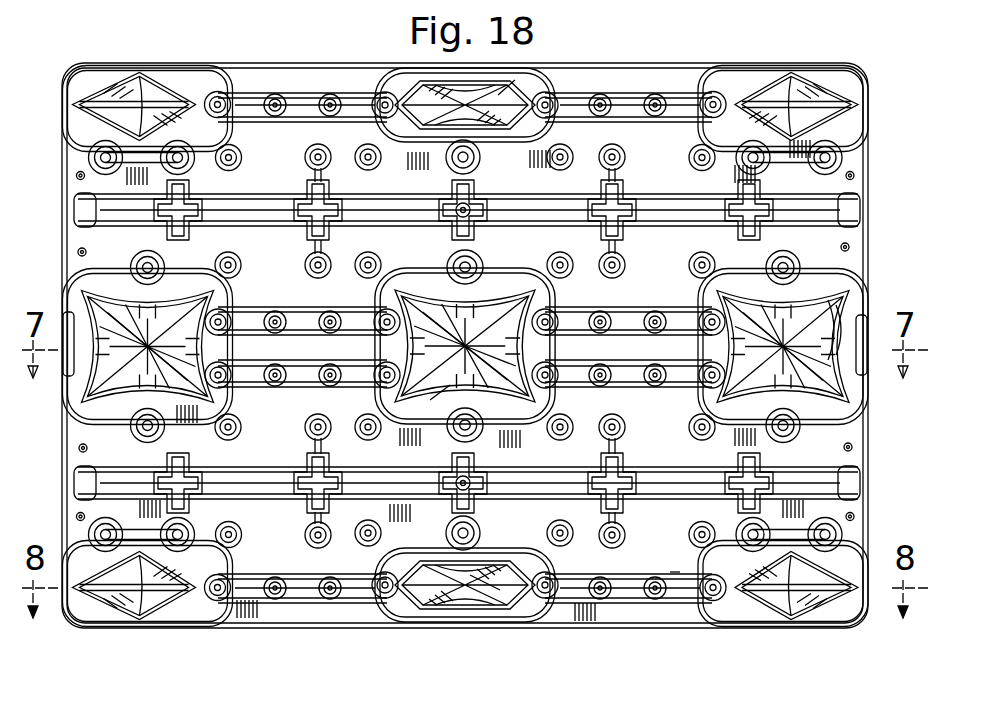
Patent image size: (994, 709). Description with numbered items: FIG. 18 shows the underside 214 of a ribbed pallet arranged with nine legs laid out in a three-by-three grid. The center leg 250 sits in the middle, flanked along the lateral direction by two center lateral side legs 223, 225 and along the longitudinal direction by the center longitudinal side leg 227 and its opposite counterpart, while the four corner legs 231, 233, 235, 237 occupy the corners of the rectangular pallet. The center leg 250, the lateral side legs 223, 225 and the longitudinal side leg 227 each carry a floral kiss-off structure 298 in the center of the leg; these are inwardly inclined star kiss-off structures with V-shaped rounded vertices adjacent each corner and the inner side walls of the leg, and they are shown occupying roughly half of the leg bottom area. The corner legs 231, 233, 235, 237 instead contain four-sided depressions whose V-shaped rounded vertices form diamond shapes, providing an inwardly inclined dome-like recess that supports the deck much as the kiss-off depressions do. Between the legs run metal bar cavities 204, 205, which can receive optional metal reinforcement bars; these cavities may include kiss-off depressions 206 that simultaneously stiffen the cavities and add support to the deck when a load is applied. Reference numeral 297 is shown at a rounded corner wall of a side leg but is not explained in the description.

The metal bar cavity 204 is at (825, 213).
The metal bar cavity 205 is at (296, 96).
The kiss-off depression 206 is at (267, 600).
The underside 214 is at (675, 558).
The center lateral side leg 223 is at (535, 612).
The center lateral side leg 225 is at (405, 78).
The center longitudinal side leg 227 is at (100, 292).
The corner leg 231 is at (110, 612).
The corner leg 233 is at (168, 82).
The corner leg 235 is at (847, 617).
The corner leg 237 is at (830, 83).
The center leg 250 is at (493, 283).
The rounded corner wall 297 is at (853, 398).
The floral kiss-off structure 298 is at (515, 78).